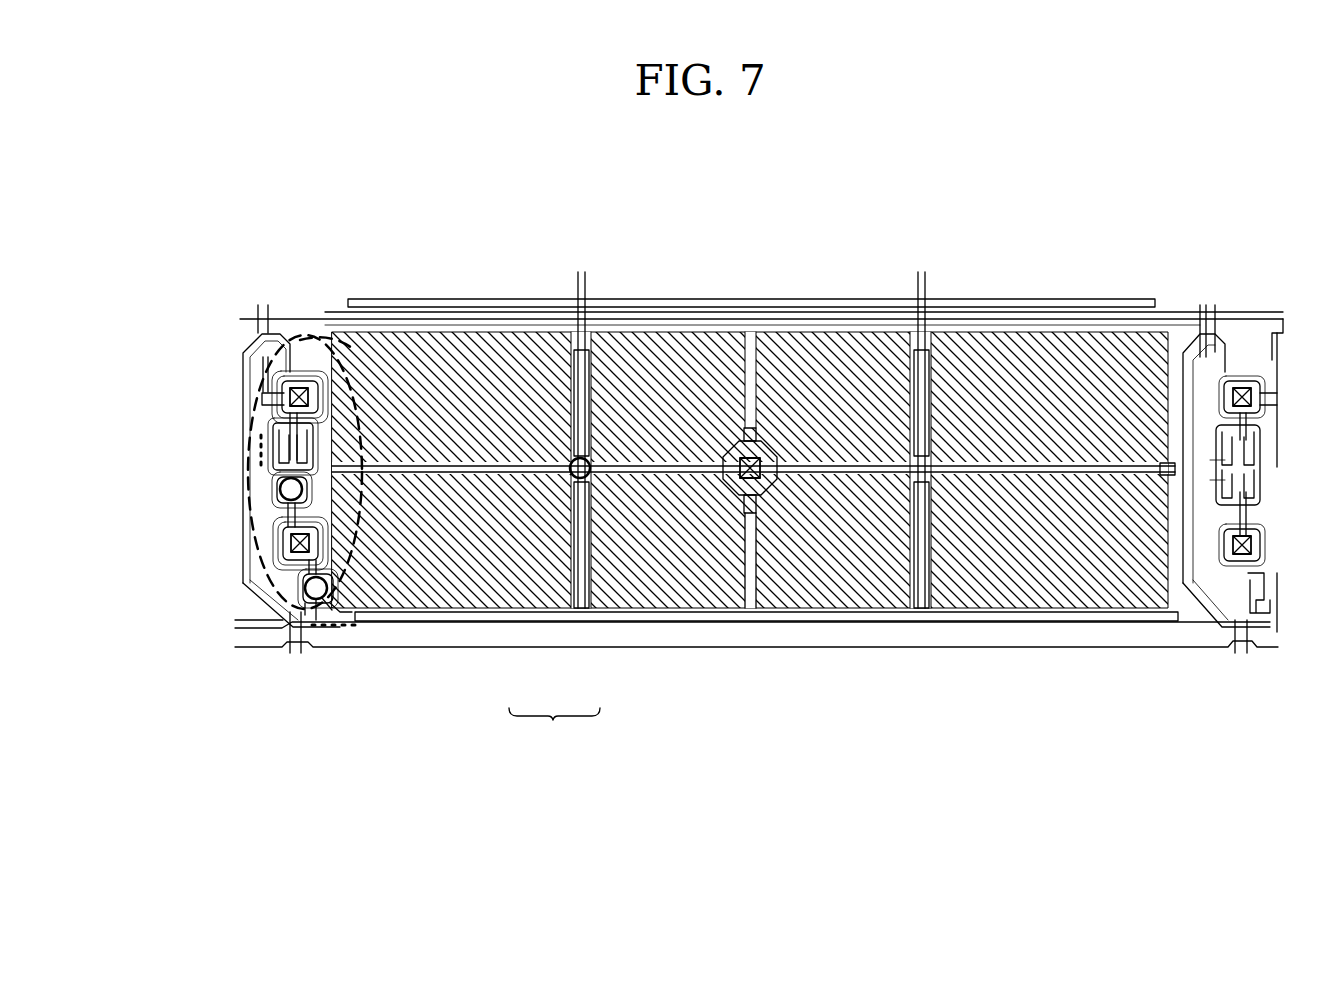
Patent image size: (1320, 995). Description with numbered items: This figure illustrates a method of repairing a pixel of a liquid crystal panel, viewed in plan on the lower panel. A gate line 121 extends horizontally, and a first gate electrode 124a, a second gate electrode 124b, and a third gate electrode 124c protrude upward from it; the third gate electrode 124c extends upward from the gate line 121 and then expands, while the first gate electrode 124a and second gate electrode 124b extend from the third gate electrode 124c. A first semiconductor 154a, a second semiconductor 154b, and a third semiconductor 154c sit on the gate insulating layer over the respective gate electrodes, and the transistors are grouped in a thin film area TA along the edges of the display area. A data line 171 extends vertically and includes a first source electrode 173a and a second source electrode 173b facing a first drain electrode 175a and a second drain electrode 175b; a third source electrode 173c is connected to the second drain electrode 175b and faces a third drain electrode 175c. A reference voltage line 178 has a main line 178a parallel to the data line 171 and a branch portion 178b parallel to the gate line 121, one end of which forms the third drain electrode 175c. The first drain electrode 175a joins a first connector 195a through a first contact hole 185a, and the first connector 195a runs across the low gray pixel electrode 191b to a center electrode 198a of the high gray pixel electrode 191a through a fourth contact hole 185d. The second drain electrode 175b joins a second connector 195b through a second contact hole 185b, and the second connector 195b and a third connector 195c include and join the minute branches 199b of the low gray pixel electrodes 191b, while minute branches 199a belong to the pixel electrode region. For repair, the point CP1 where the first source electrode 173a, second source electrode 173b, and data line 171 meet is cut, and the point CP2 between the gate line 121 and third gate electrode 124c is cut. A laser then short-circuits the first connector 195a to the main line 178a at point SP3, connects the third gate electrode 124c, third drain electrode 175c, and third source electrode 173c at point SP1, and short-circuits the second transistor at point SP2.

The gate line 121 is at (412, 648).
The first gate electrode 124a is at (266, 430).
The second gate electrode 124b is at (276, 498).
The third gate electrode 124c is at (303, 606).
The first semiconductor 154a is at (268, 422).
The second semiconductor 154b is at (281, 521).
The third semiconductor 154c is at (311, 601).
The data line 171 is at (245, 368).
The first source electrode 173a is at (268, 445).
The second source electrode 173b is at (270, 476).
The third source electrode 173c is at (300, 580).
The first drain electrode 175a is at (272, 410).
The second drain electrode 175b is at (280, 546).
The third drain electrode 175c is at (320, 613).
The reference voltage line 178 is at (554, 730).
The main line 178a is at (576, 580).
The branch portion 178b is at (530, 614).
The first contact hole 185a is at (296, 386).
The second contact hole 185b is at (292, 549).
The fourth contact hole 185d is at (753, 456).
The high gray pixel electrode 191a is at (698, 606).
The low gray pixel electrode 191b is at (468, 606).
The first connector 195a is at (316, 338).
The second connector 195b is at (362, 618).
The third connector 195c is at (670, 303).
The center electrode 198a is at (762, 588).
The minute branches 199a is at (802, 590).
The minute branches 199b is at (447, 600).
The cutting point CP1 is at (262, 458).
The cutting point CP2 is at (336, 627).
The short-circuit point SP1 is at (312, 596).
The short-circuit point SP2 is at (281, 489).
The short-circuit point SP3 is at (576, 460).
The thin film area TA is at (372, 352).